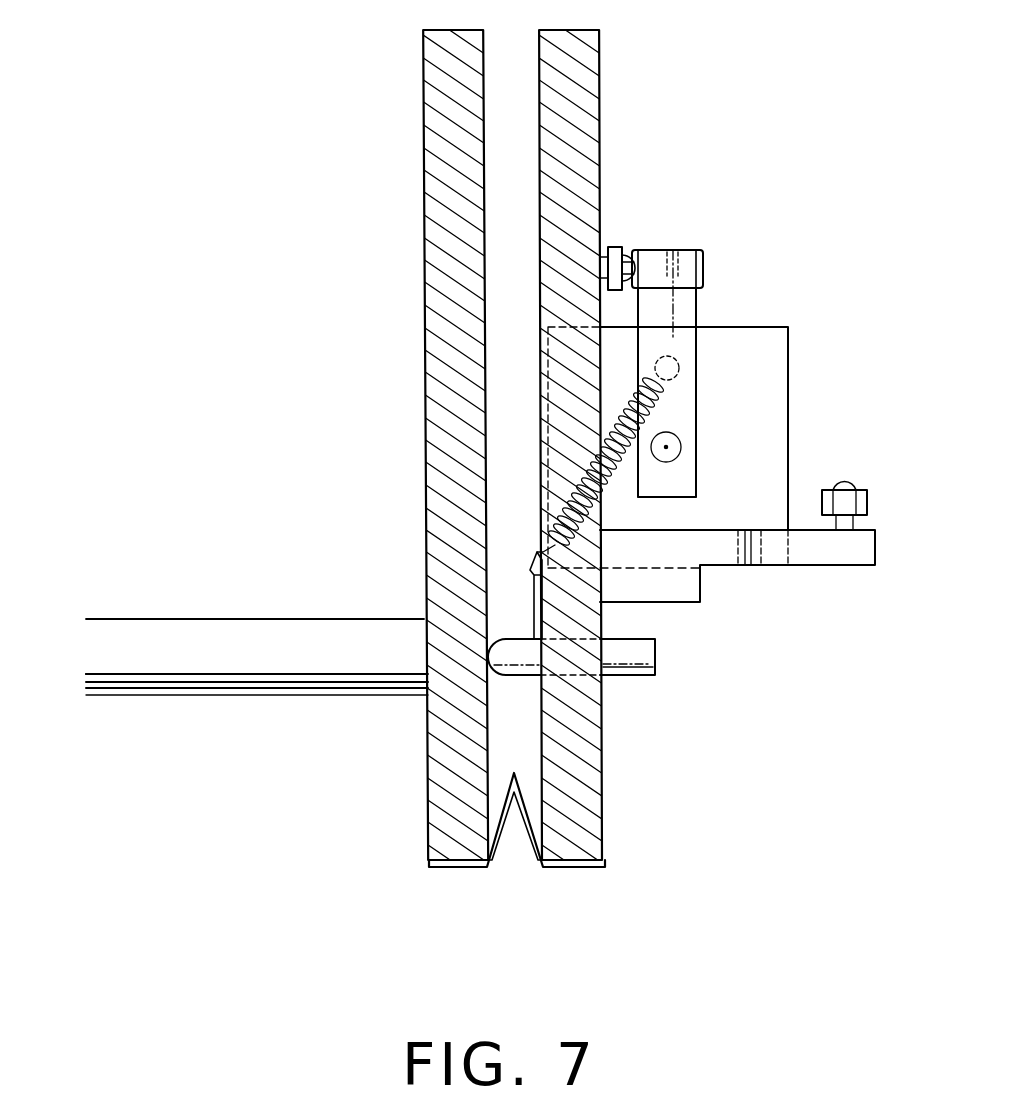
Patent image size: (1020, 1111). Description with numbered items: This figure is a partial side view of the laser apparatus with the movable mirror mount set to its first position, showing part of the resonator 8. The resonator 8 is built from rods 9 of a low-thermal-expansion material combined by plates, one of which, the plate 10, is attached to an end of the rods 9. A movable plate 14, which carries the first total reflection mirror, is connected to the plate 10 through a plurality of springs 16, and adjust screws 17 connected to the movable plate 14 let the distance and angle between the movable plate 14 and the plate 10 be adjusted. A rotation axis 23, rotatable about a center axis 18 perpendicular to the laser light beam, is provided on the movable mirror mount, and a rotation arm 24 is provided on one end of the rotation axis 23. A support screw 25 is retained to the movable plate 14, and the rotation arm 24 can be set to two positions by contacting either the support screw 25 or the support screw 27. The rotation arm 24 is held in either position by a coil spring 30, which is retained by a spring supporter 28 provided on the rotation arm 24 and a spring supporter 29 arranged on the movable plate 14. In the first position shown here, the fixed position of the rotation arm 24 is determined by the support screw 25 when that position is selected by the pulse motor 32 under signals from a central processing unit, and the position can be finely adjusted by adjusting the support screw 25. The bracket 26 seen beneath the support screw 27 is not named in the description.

The resonator 8 is at (245, 697).
The rod 9 is at (305, 619).
The plate 10 is at (423, 100).
The movable plate 14 is at (600, 84).
The spring 16 is at (583, 868).
The adjust screw 17 is at (632, 680).
The center axis 18 is at (666, 447).
The rotation axis 23 is at (680, 458).
The rotation arm 24 is at (707, 300).
The support screw 25 is at (617, 242).
The bracket 26 is at (775, 566).
The support screw 27 is at (860, 473).
The spring supporter 28 is at (675, 355).
The spring supporter 29 is at (545, 622).
The coil spring 30 is at (640, 417).
The pulse motor 32 is at (788, 336).